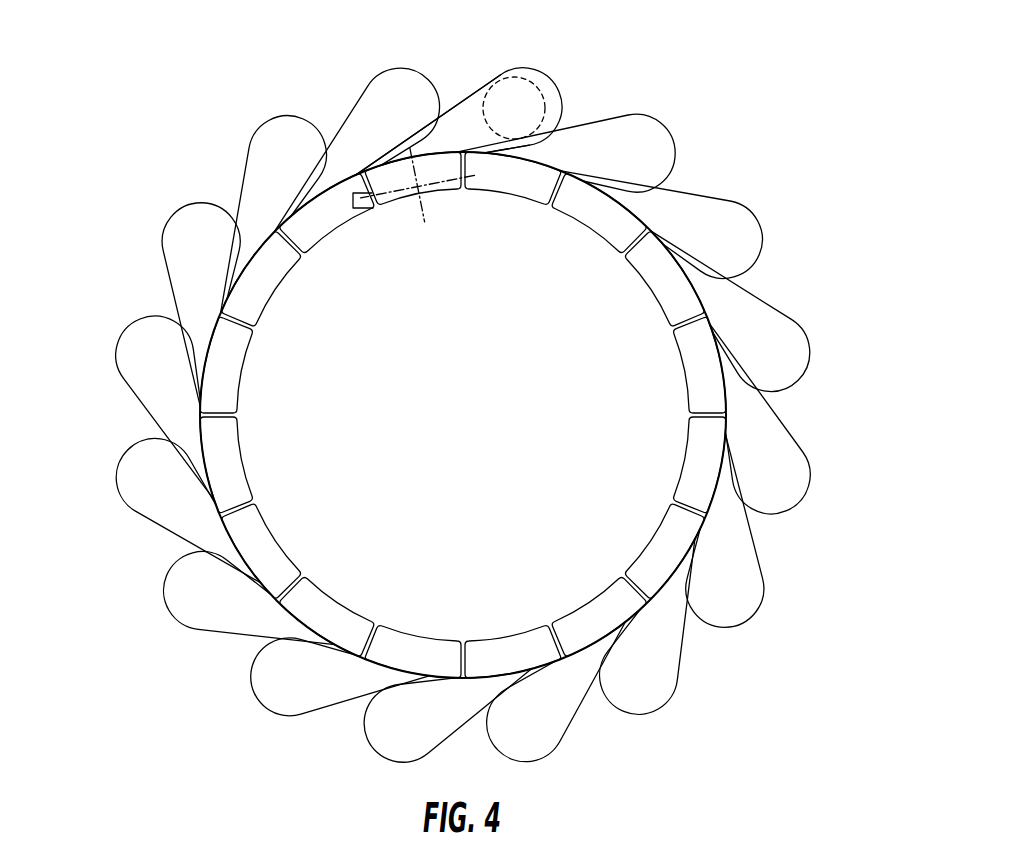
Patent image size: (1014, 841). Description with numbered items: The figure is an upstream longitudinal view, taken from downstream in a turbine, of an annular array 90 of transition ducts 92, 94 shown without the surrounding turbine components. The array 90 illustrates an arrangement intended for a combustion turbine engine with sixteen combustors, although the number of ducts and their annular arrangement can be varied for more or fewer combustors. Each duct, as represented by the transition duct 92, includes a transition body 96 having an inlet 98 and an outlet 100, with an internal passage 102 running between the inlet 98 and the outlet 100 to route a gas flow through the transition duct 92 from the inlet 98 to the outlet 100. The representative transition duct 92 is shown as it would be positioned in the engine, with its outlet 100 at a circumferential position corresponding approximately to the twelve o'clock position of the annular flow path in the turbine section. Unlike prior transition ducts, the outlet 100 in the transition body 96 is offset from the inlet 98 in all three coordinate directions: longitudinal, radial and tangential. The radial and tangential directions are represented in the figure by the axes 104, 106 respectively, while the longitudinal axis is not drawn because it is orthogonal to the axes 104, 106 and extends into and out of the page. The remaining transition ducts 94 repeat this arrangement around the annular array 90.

The annular array 90 is at (766, 133).
The transition duct 92 is at (502, 72).
The transition ducts 94 is at (399, 68).
The transition body 96 is at (463, 98).
The inlet 98 is at (536, 100).
The outlet 100 is at (383, 206).
The internal passage 102 is at (486, 146).
The radial axis 104 is at (422, 221).
The tangential axis 106 is at (362, 212).